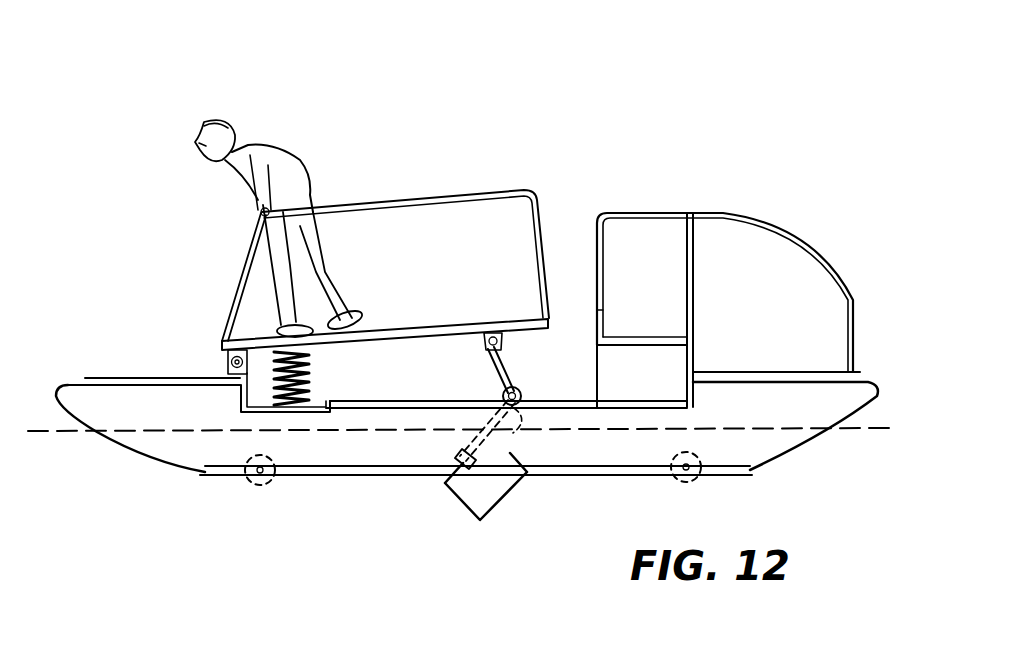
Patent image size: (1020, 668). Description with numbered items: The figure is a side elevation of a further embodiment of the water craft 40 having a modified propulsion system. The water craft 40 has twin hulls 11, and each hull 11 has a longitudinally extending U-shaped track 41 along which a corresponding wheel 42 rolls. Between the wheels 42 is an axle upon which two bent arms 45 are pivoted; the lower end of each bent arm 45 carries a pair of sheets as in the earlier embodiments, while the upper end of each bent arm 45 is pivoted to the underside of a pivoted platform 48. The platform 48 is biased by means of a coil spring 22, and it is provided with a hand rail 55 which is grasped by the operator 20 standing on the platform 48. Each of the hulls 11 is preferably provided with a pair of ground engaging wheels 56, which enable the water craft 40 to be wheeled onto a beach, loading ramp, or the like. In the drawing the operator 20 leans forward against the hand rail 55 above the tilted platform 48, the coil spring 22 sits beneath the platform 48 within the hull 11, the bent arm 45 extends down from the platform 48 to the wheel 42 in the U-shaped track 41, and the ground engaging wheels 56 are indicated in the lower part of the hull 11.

The water craft 40 is at (735, 88).
The hull 11 is at (780, 442).
The operator 20 is at (268, 145).
The coil spring 22 is at (317, 376).
The U-shaped track 41 is at (622, 378).
The wheel 42 is at (523, 392).
The bent arm 45 is at (490, 365).
The pivoted platform 48 is at (410, 325).
The hand rail 55 is at (423, 188).
The ground engaging wheel 56 is at (268, 482).